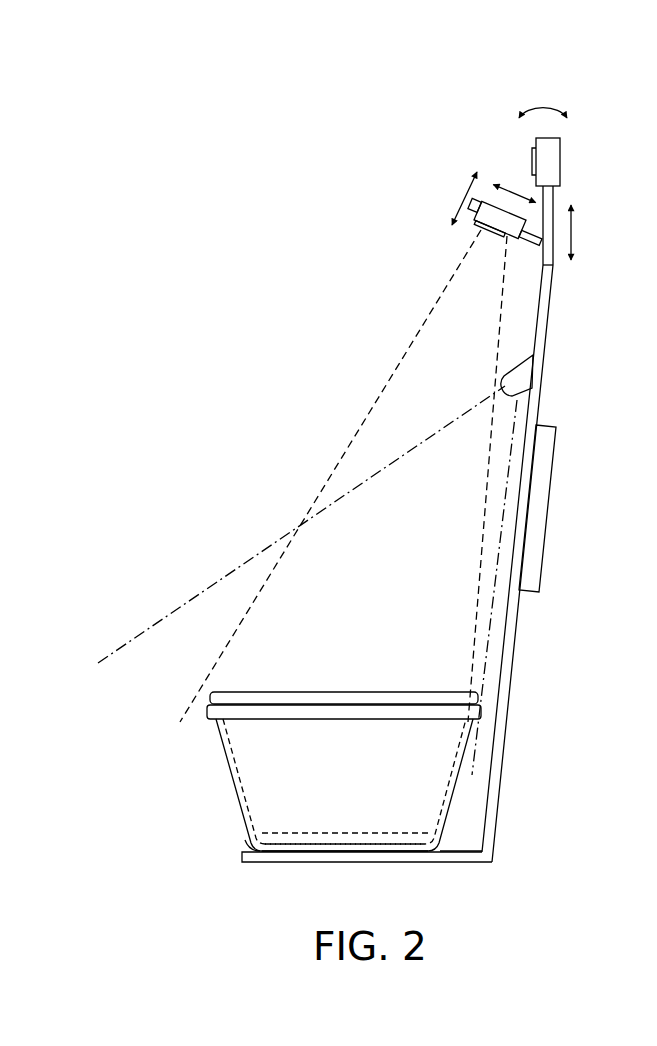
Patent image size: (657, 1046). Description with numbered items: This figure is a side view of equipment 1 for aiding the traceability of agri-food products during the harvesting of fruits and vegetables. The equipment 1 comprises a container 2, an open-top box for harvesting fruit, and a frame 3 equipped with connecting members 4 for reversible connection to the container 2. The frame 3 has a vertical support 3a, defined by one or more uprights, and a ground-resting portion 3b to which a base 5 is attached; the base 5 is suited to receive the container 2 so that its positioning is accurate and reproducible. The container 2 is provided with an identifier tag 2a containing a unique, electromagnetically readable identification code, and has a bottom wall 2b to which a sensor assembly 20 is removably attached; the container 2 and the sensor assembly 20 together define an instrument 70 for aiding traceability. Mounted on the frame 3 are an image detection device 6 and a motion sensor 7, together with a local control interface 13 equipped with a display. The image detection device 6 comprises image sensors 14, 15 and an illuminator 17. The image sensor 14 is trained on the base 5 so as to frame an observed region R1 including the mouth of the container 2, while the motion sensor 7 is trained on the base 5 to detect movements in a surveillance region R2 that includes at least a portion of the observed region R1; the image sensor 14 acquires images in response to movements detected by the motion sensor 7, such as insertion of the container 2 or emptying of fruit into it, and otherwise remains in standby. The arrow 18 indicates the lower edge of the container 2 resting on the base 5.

The equipment 1 is at (266, 232).
The container 2 is at (312, 694).
The identifier tag 2a is at (350, 856).
The bottom wall 2b is at (307, 840).
The frame 3 is at (558, 370).
The vertical support 3a is at (543, 345).
The ground-resting portion 3b is at (458, 864).
The connecting members 4 is at (462, 820).
The base 5 is at (230, 758).
The image detection device 6 is at (426, 186).
The motion sensor 7 is at (511, 373).
The local control interface 13 is at (540, 521).
The image sensor 14 is at (506, 178).
The image sensor 15 is at (559, 160).
The illuminator 17 is at (475, 205).
The bottom edge of container 18 is at (237, 845).
The sensor assembly 20 is at (338, 845).
The instrument 70 is at (363, 690).
The observed region R1 is at (360, 430).
The surveillance region R2 is at (200, 588).